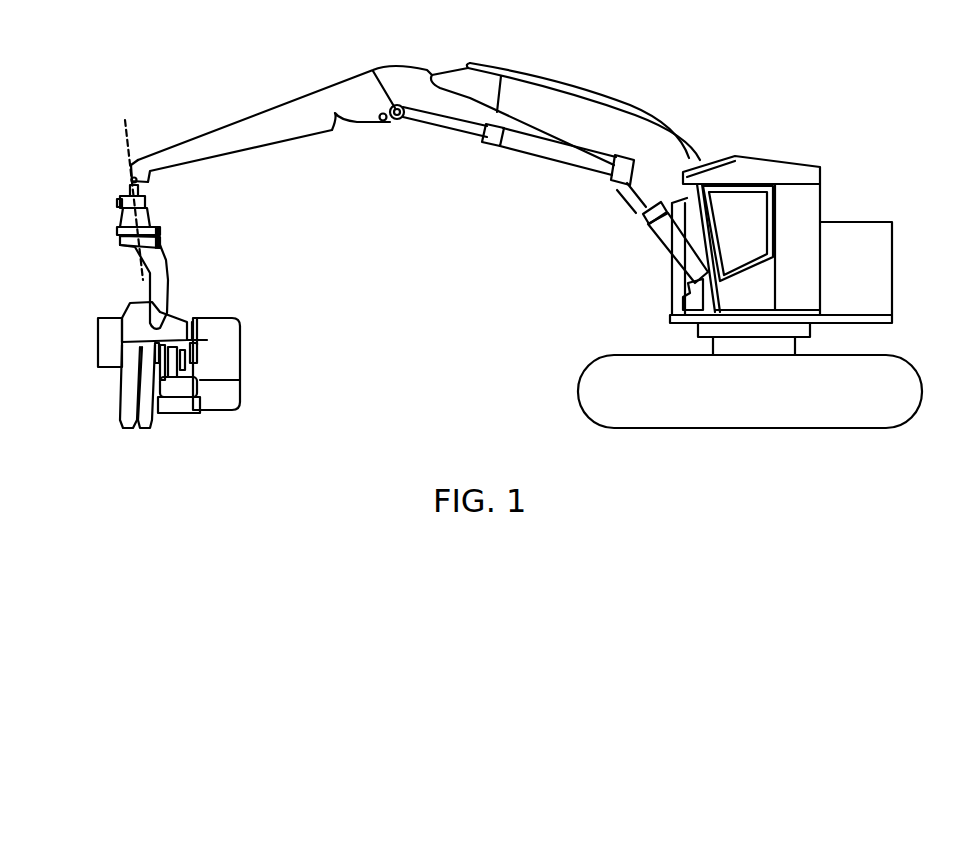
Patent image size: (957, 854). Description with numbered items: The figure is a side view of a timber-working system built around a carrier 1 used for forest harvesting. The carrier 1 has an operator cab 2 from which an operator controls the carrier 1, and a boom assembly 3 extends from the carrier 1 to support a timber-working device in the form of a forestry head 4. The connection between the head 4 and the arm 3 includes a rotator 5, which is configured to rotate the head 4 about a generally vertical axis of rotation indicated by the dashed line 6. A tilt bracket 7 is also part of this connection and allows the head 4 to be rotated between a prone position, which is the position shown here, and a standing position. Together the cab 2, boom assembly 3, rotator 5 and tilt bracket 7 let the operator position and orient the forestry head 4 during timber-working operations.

The carrier 1 is at (218, 59).
The operator cab 2 is at (797, 164).
The boom assembly 3 is at (575, 88).
The forestry head 4 is at (266, 306).
The rotator 5 is at (145, 203).
The axis of rotation 6 is at (127, 189).
The tilt bracket 7 is at (168, 273).